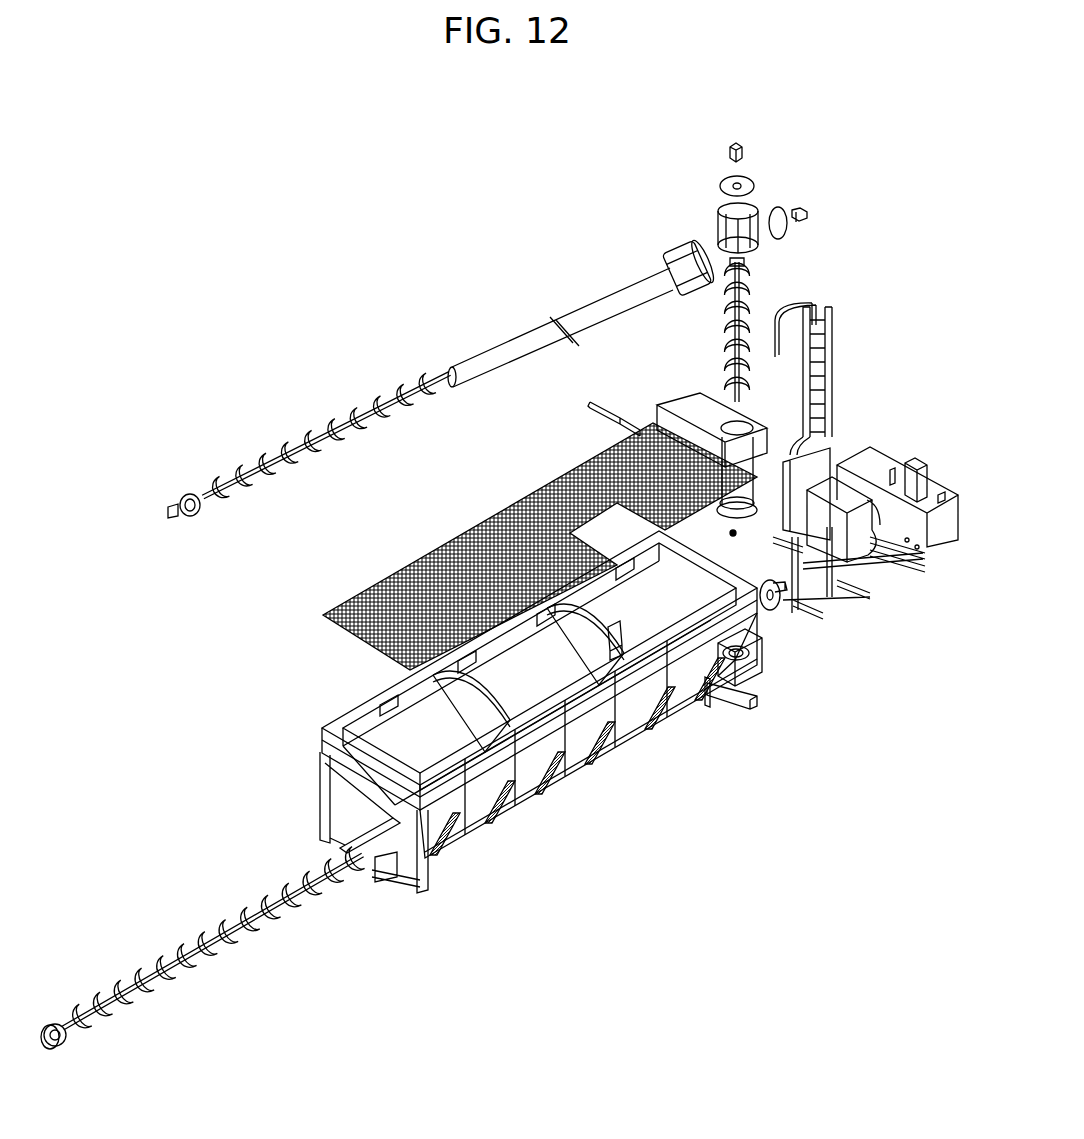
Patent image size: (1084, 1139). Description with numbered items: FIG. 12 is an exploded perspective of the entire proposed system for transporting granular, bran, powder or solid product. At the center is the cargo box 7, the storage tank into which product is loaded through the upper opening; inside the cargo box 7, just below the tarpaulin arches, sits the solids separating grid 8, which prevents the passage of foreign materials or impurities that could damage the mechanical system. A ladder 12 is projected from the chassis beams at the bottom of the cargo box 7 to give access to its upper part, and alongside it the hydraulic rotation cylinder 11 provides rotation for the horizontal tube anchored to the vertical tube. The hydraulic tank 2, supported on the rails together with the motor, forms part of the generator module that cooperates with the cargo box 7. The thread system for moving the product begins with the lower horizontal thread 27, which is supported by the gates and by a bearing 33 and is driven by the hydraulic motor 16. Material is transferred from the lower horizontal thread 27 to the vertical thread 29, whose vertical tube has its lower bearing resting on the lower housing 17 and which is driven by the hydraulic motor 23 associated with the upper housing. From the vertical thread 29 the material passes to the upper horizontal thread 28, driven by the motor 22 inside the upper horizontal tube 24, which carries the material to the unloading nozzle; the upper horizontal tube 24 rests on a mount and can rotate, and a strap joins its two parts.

The hydraulic tank 2 is at (910, 470).
The cargo box 7 is at (563, 773).
The solids separating grid 8 is at (323, 617).
The hydraulic rotation cylinder 11 is at (597, 405).
The ladder 12 is at (825, 352).
The hydraulic motor 16 is at (778, 602).
The lower housing 17 is at (751, 530).
The motor 22 is at (807, 210).
The hydraulic motor 23 is at (742, 152).
The upper horizontal tube 24 is at (602, 300).
The lower horizontal thread 27 is at (252, 938).
The upper horizontal thread 28 is at (262, 460).
The vertical thread 29 is at (747, 297).
The bearing 33 is at (62, 1043).